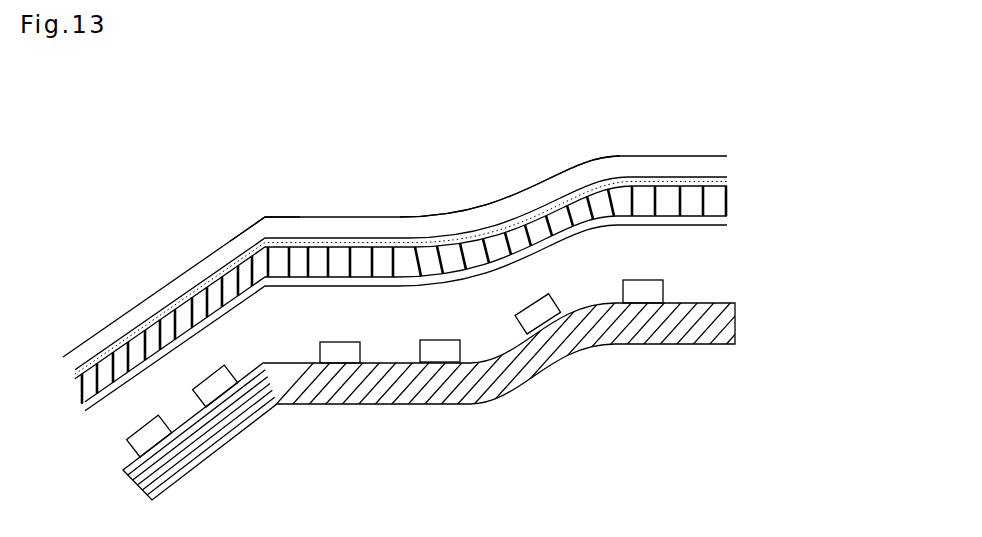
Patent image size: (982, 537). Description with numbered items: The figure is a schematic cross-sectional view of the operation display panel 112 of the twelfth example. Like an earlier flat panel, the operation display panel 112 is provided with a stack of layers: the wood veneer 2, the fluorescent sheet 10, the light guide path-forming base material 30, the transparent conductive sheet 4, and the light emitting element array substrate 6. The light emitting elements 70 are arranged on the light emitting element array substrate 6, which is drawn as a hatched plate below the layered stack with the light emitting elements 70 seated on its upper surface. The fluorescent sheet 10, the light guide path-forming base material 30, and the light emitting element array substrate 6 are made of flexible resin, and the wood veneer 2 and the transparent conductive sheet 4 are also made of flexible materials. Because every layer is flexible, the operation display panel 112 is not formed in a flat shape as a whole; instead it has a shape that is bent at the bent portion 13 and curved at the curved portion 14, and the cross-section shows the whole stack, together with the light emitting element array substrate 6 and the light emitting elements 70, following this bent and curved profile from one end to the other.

The operation display panel 112 is at (172, 165).
The wood veneer 2 is at (722, 165).
The fluorescent sheet 10 is at (730, 179).
The light guide path-forming base material 30 is at (715, 198).
The transparent conductive sheet 4 is at (733, 222).
The bent portion 13 is at (260, 206).
The curved portion 14 is at (643, 103).
The light emitting element array substrate 6 is at (728, 320).
The light emitting elements 70 is at (642, 292).